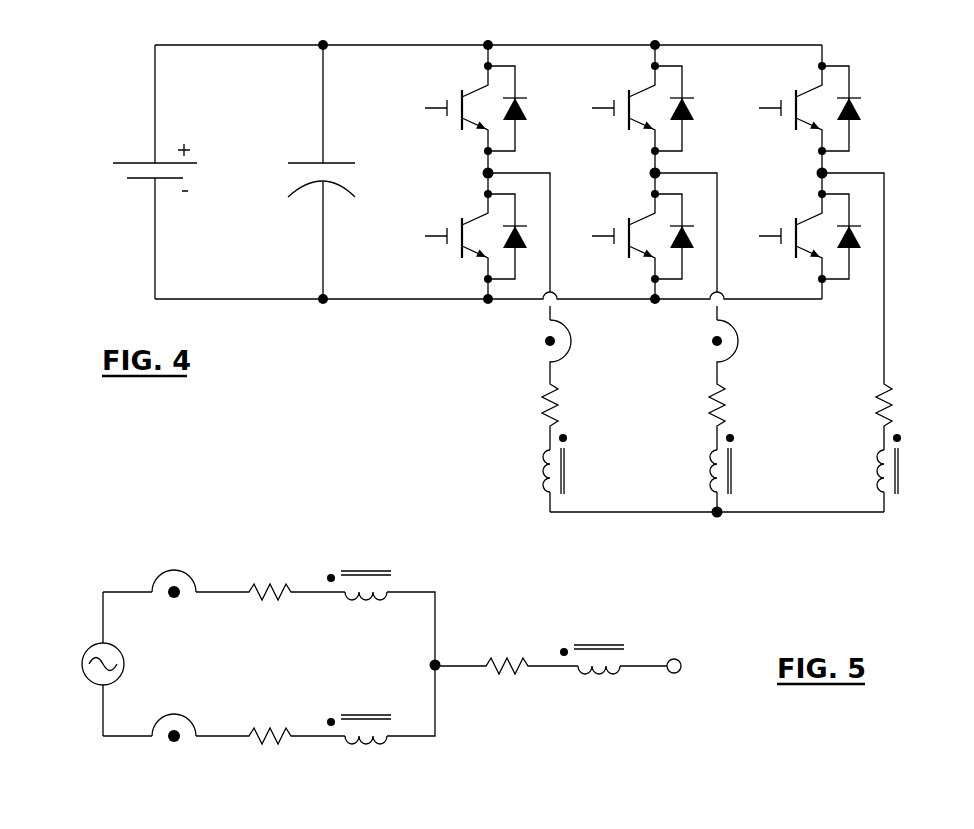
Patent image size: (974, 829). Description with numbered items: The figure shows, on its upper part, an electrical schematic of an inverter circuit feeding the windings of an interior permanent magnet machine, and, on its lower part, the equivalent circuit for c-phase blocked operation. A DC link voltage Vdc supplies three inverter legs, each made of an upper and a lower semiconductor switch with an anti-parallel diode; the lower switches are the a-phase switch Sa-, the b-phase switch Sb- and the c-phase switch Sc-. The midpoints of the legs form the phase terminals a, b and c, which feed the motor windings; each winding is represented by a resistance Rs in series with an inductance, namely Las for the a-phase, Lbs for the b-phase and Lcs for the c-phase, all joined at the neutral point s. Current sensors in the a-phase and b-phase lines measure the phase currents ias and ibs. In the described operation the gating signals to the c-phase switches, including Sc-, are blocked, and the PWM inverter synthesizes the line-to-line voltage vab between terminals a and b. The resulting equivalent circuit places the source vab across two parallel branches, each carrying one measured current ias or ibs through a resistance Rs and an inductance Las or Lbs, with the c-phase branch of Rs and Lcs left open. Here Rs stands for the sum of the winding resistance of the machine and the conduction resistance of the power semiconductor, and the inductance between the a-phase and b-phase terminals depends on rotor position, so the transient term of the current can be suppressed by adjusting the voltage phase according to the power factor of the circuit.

In FIG. 4, the DC link voltage source Vdc is at (185, 172).
In FIG. 4, the phase a lower switch (IGBT with anti-parallel diode) Sa- is at (460, 236).
In FIG. 4, the phase b lower switch Sb- is at (627, 236).
In FIG. 4, the c-phase lower semiconductor switch Sc- is at (794, 236).
In FIG. 4, the phase a output node a is at (473, 173).
In FIG. 4, the phase b output node b is at (640, 173).
In FIG. 4, the phase c output node c is at (807, 173).
In FIG. 4, the phase a stator current sensor ias is at (545, 341).
In FIG. 5, the phase a stator current sensor ias is at (174, 598).
In FIG. 4, the phase b stator current sensor ibs is at (712, 341).
In FIG. 5, the phase b stator current sensor ibs is at (174, 742).
In FIG. 4, the stator resistance Rs is at (741, 405).
In FIG. 5, the stator resistance Rs is at (388, 635).
In FIG. 4, the phase a stator inductance Las is at (576, 465).
In FIG. 5, the phase a stator inductance Las is at (359, 562).
In FIG. 4, the phase b stator inductance Lbs is at (744, 465).
In FIG. 5, the phase b stator inductance Lbs is at (359, 707).
In FIG. 4, the phase c stator inductance Lcs is at (910, 465).
In FIG. 5, the phase c stator inductance Lcs is at (592, 635).
In FIG. 4, the stator neutral node s is at (717, 535).
In FIG. 5, the line-to-line voltage vab is at (78, 664).